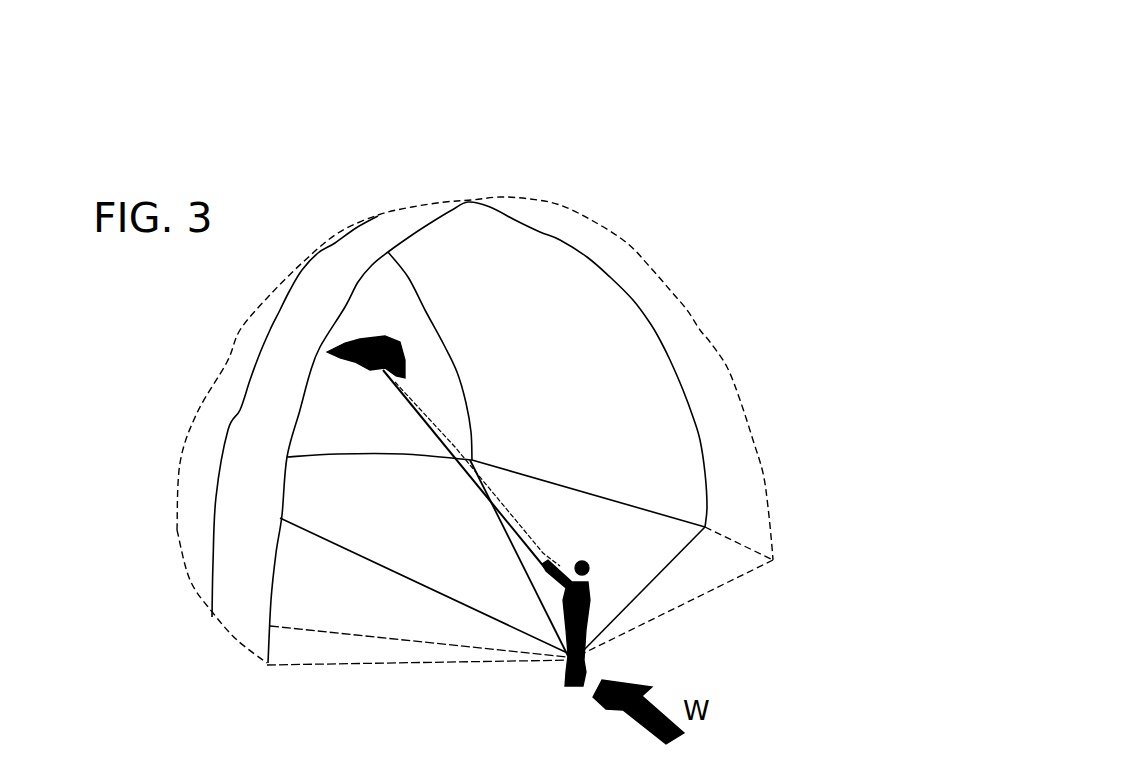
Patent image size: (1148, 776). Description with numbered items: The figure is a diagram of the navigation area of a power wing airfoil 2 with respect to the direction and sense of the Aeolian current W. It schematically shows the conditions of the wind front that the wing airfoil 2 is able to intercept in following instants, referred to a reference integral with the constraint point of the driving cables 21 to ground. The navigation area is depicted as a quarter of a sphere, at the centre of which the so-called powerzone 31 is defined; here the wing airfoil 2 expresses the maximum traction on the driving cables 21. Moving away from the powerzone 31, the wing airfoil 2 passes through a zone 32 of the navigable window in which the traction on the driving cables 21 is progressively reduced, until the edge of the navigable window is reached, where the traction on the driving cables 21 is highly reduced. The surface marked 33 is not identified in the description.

The wing airfoil 2 is at (392, 343).
The driving cables 21 is at (498, 487).
The powerzone 31 is at (388, 300).
The zone of the window which can be navigated 32 is at (227, 362).
The inner spherical surface 33 is at (238, 498).